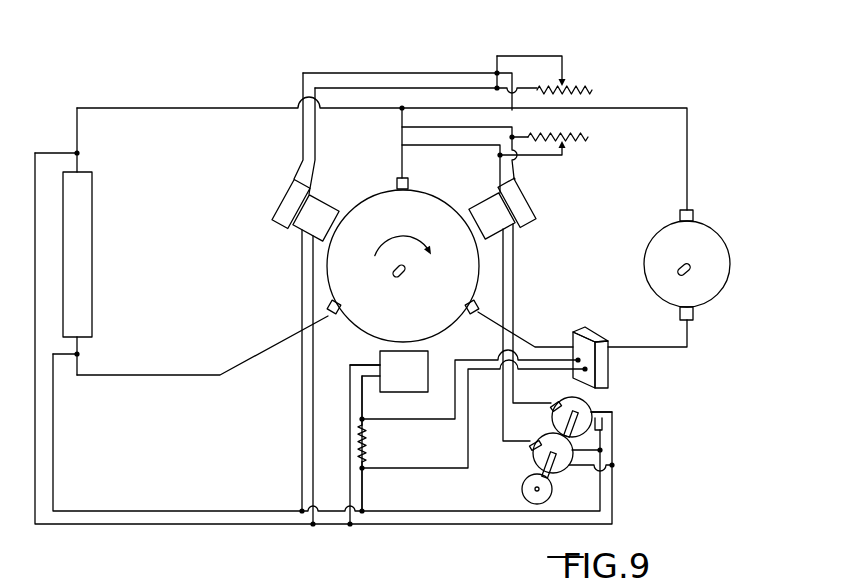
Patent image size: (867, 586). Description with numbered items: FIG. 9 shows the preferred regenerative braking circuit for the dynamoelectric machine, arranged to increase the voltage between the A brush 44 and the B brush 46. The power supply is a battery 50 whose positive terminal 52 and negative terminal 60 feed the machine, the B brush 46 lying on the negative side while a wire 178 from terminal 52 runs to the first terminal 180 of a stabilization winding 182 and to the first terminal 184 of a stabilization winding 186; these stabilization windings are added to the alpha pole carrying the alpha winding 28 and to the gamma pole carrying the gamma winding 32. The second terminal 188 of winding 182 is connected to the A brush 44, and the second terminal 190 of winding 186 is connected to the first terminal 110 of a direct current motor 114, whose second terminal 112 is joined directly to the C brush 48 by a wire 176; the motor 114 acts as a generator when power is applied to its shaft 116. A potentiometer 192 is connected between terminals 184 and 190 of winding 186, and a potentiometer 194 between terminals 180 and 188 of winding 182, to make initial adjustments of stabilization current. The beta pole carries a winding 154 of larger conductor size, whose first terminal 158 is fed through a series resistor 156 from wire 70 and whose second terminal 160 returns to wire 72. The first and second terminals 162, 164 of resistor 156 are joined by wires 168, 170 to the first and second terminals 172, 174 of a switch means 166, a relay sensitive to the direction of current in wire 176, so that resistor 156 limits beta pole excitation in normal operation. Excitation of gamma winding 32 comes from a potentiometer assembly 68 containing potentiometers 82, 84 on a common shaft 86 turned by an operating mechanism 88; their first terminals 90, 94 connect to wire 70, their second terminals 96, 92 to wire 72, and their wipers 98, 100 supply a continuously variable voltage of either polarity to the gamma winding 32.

The alpha winding 28 is at (328, 212).
The gamma winding 32 is at (490, 205).
The A brush 44 is at (409, 184).
The B brush 46 is at (330, 305).
The C brush 48 is at (474, 316).
The battery 50 is at (84, 320).
The positive terminal 52 is at (79, 153).
The negative terminal 60 is at (80, 354).
The potentiometer assembly 68 is at (626, 443).
The wire 70 is at (54, 440).
The wire 72 is at (36, 478).
The potentiometer 82 is at (562, 472).
The potentiometer 84 is at (578, 399).
The common shaft 86 is at (541, 463).
The operating mechanism 88 is at (523, 491).
The first terminal 90 is at (602, 450).
The second terminal 92 is at (604, 407).
The first terminal 94 is at (602, 425).
The second terminal 96 is at (614, 466).
The wiper 98 is at (537, 442).
The wiper 100 is at (555, 404).
The first terminal 110 is at (688, 170).
The second terminal 112 is at (688, 338).
The direct current motor 114 is at (707, 246).
The shaft 116 is at (690, 272).
The winding 154 is at (417, 373).
The resistor 156 is at (365, 463).
The first terminal 158 is at (366, 420).
The second terminal 160 is at (363, 365).
The first terminal 162 is at (364, 424).
The second terminal 164 is at (364, 471).
The switch means 166 is at (605, 330).
The wire 168 is at (455, 408).
The wire 170 is at (468, 442).
The first terminal 172 is at (580, 360).
The second terminal 174 is at (587, 369).
The wire 176 is at (530, 345).
The wire 178 is at (199, 108).
The first terminal 180 is at (518, 168).
The stabilization winding 182 is at (549, 211).
The first terminal 184 is at (313, 175).
The stabilization winding 186 is at (276, 214).
The second terminal 188 is at (502, 172).
The second terminal 190 is at (303, 138).
The potentiometer 192 is at (590, 77).
The potentiometer 194 is at (596, 119).